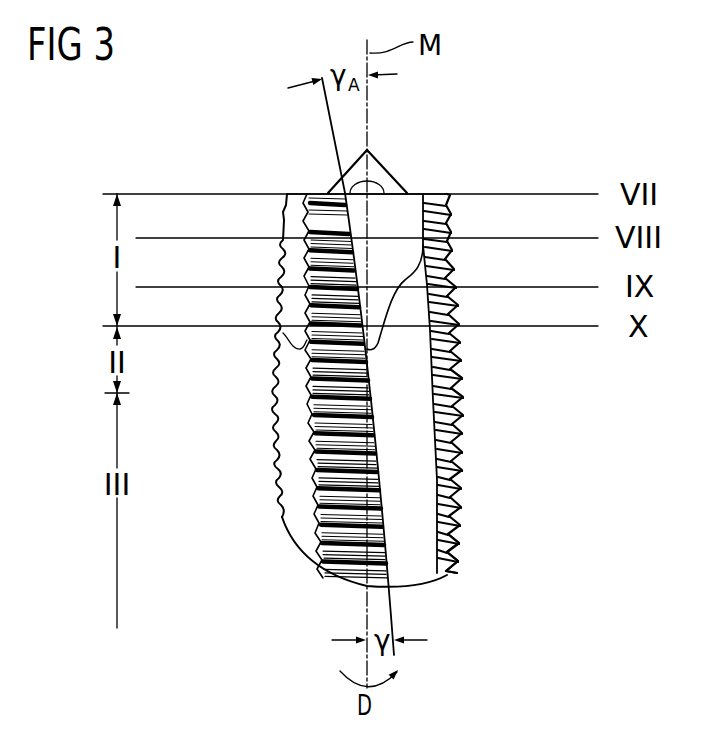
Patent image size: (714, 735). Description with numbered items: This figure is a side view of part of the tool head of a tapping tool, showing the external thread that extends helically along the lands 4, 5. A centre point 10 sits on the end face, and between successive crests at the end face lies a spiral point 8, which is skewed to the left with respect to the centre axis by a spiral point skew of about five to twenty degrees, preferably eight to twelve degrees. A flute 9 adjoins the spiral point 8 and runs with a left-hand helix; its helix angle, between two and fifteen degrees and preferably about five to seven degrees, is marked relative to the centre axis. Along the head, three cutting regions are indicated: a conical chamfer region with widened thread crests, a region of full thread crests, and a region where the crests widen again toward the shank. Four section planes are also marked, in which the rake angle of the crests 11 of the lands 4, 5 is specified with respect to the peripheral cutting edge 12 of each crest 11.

The land 4 is at (318, 538).
The land 5 is at (458, 553).
The spiral point 8 is at (412, 205).
The flute 9 is at (300, 477).
The centre point 10 is at (378, 161).
The crest 11 is at (332, 560).
The peripheral cutting edge 12 is at (382, 452).